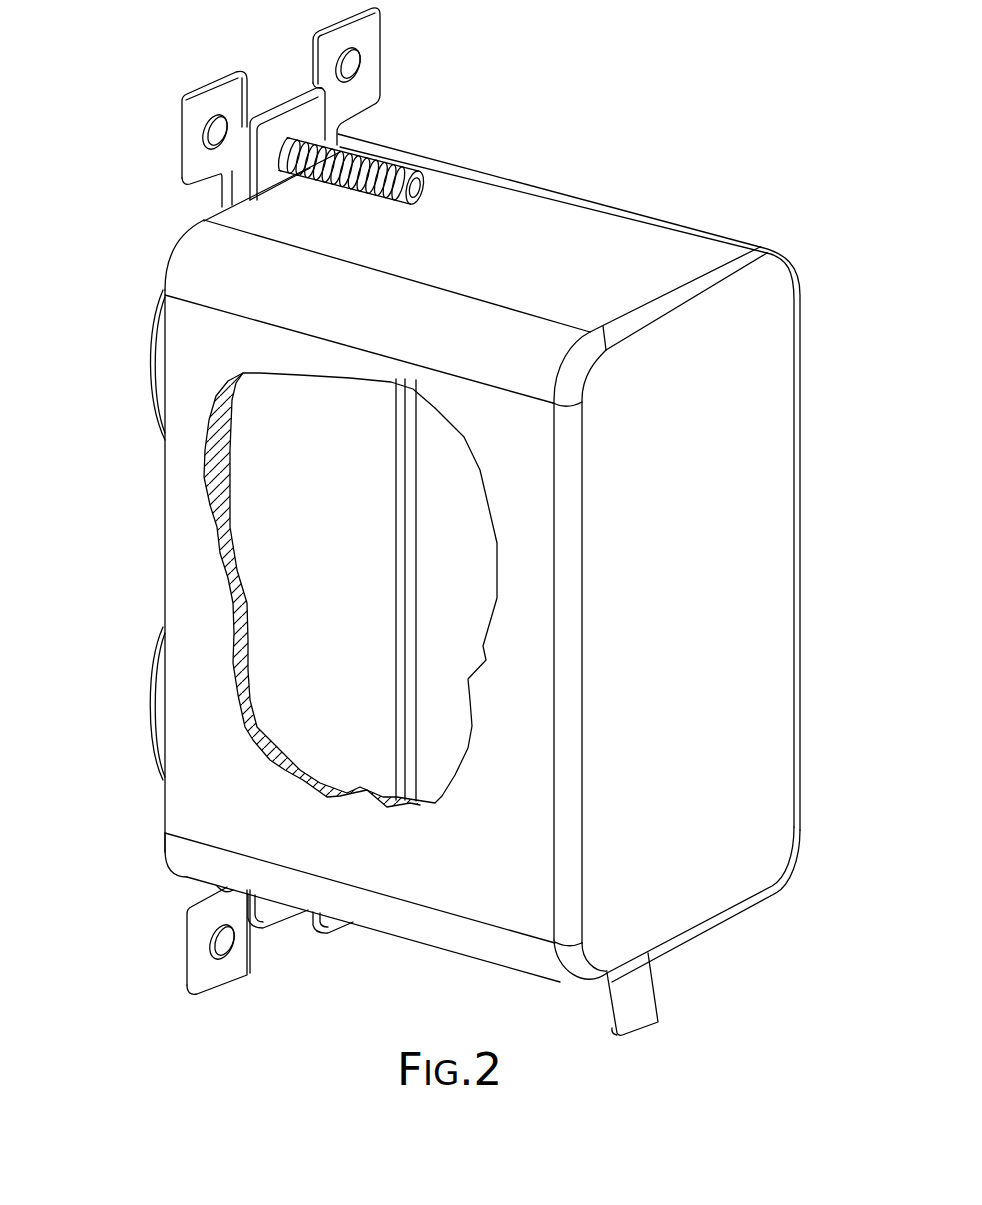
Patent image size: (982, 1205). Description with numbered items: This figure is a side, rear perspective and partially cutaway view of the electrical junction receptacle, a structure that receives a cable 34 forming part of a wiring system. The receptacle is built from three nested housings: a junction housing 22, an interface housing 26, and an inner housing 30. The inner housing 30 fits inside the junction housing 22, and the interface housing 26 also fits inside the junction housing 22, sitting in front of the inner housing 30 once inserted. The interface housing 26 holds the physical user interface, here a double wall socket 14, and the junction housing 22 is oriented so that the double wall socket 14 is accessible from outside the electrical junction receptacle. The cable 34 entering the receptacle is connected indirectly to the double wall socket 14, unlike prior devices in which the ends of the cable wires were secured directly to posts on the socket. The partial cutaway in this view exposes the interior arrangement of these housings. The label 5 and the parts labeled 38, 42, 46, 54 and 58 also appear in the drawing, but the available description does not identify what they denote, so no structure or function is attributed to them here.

The section line 5- 5 is at (158, 445).
The double wall socket 14 is at (144, 337).
The junction housing 22 is at (159, 496).
The interface housing 26 is at (342, 583).
The inner housing 30 is at (469, 612).
The cable 34 is at (640, 1004).
The mounting tab 38 is at (200, 169).
The mounting tab 42 is at (210, 980).
The screw 46 is at (422, 182).
The bracket 54 is at (287, 110).
The clip foot 58 is at (277, 910).